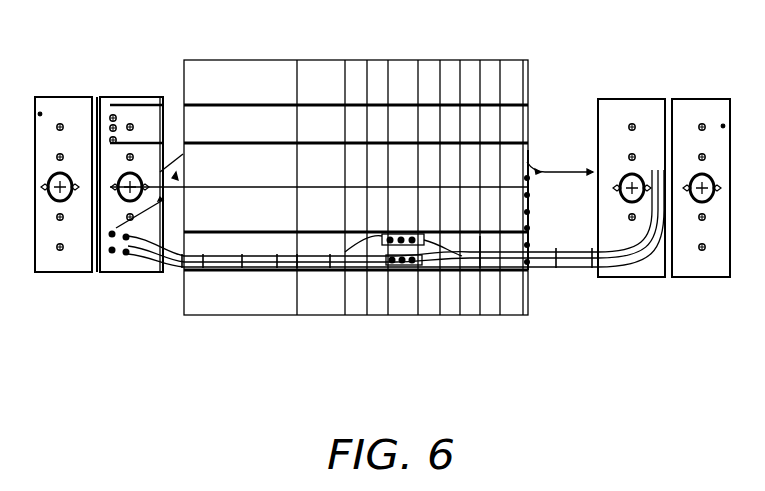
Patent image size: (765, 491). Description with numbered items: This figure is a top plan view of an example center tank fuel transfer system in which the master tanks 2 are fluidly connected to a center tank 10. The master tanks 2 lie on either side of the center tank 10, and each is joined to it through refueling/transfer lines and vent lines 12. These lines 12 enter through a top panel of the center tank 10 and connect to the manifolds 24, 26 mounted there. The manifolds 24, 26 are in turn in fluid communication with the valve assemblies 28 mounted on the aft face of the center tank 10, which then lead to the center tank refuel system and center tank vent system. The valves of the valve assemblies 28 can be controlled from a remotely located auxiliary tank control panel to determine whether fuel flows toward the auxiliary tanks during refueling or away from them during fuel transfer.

The master tank 2 is at (60, 95).
The center tank 10 is at (266, 76).
The refueling/transfer lines and vent lines 12 is at (217, 250).
The manifold 24 is at (410, 238).
The manifold 26 is at (410, 264).
The valve assembly 28 is at (549, 213).